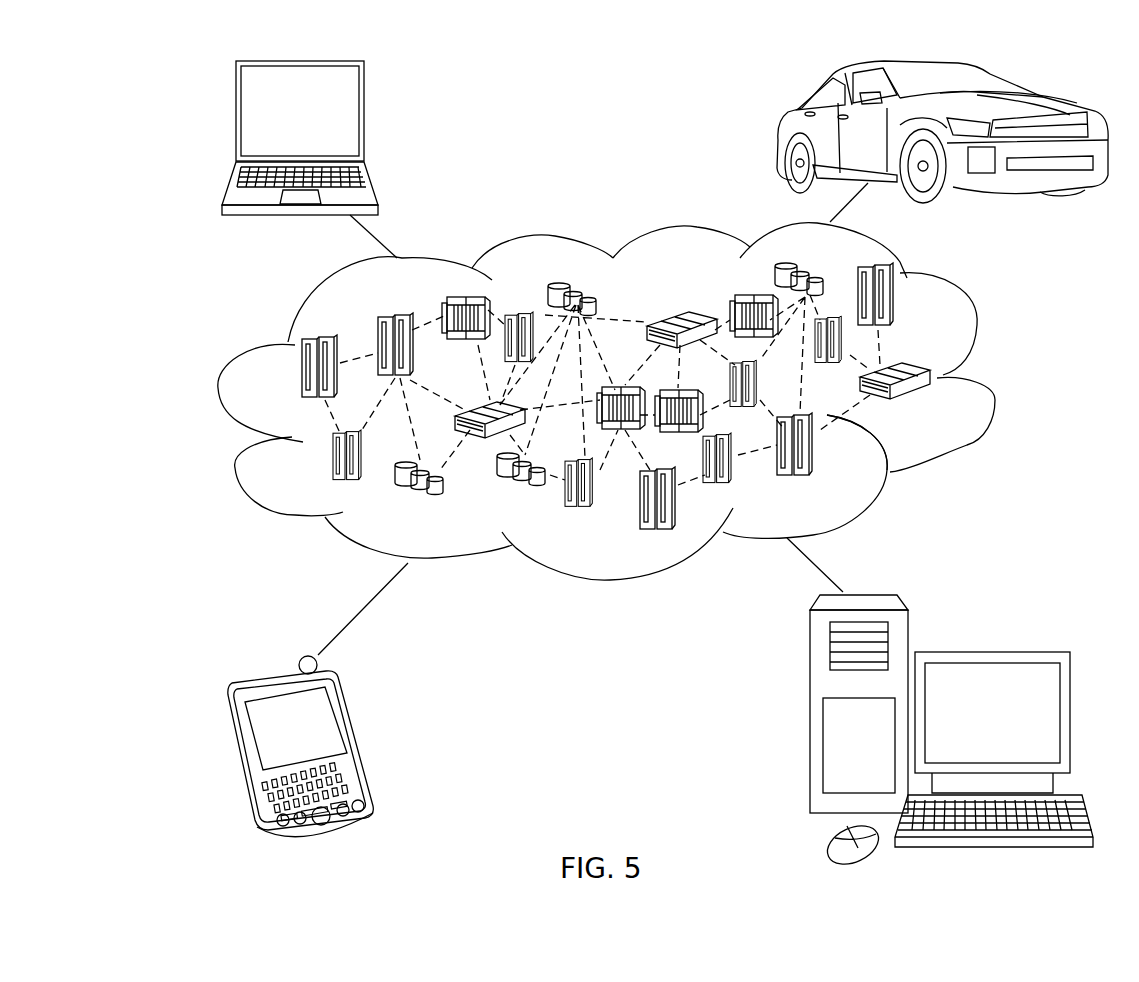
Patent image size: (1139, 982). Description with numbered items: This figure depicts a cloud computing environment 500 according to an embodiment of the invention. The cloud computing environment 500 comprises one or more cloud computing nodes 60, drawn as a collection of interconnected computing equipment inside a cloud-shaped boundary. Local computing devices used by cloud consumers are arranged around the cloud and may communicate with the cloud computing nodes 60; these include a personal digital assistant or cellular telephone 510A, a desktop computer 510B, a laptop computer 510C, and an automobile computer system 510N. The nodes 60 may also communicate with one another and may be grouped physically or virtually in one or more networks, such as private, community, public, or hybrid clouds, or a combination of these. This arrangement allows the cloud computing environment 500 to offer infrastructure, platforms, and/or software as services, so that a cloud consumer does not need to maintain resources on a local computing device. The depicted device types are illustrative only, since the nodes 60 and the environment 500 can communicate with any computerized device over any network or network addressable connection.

The cloud computing environment 500 is at (990, 377).
The cloud computing nodes 60 is at (933, 405).
The personal digital assistant (PDA) or cellular telephone 510A is at (355, 740).
The desktop computer 510B is at (990, 652).
The laptop computer 510C is at (366, 117).
The automobile computer system 510N is at (782, 130).